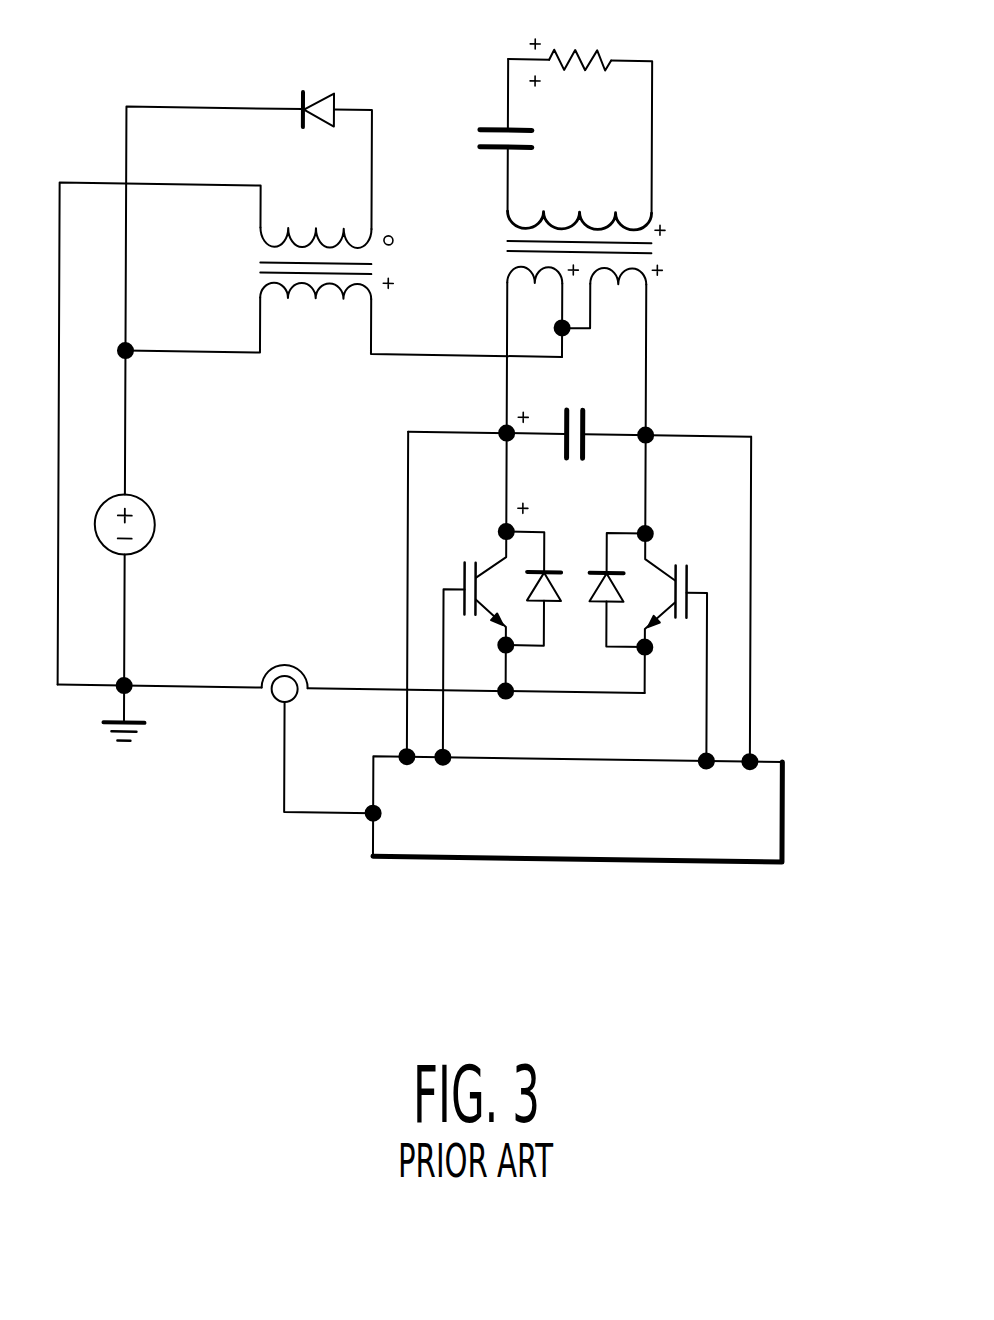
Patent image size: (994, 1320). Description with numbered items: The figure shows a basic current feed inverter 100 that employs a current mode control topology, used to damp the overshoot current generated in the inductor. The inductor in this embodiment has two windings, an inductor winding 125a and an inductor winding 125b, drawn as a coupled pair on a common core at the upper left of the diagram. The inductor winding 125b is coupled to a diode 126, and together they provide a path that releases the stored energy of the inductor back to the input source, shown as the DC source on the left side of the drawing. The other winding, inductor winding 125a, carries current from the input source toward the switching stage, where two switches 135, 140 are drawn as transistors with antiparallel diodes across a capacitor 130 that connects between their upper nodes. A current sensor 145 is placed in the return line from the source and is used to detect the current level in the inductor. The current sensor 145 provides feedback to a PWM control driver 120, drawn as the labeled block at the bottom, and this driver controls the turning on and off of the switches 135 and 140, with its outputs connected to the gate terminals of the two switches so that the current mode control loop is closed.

The current feed inverter 100 is at (162, 799).
The PWM control driver 120 is at (785, 808).
The inductor winding 125a is at (322, 305).
The inductor winding 125b is at (320, 231).
The diode 126 is at (316, 94).
The capacitor 130 is at (588, 420).
The switch 135 is at (492, 557).
The switch 140 is at (660, 559).
The current sensor 145 is at (285, 668).